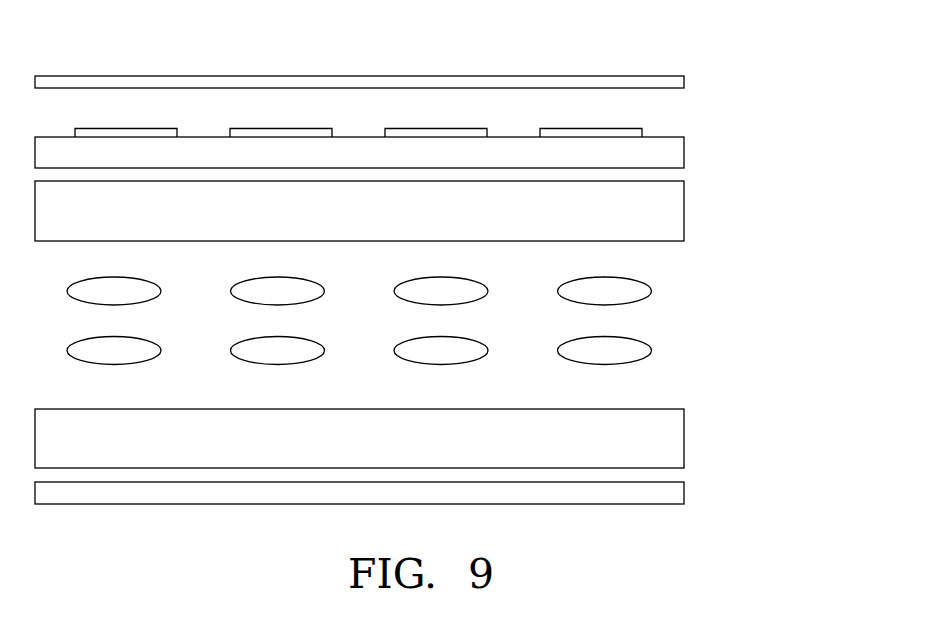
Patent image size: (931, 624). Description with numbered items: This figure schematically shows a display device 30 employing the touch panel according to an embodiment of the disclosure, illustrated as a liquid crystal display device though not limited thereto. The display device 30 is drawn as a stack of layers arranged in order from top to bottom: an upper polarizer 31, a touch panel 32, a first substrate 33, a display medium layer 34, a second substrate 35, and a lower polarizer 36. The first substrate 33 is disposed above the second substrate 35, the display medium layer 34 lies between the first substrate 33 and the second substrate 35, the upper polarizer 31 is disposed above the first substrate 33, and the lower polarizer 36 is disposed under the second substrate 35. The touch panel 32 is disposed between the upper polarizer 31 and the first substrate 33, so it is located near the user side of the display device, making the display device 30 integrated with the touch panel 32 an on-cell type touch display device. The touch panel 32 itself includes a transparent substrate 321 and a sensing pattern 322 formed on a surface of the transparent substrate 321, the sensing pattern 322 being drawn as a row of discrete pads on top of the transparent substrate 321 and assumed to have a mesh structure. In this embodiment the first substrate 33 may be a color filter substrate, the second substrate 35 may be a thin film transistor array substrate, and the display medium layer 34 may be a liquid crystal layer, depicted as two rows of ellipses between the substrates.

The display device 30 is at (376, 41).
The upper polarizer 31 is at (684, 82).
The touch panel 32 is at (440, 131).
The transparent substrate 321 is at (657, 157).
The sensing pattern 322 is at (633, 133).
The first substrate 33 is at (667, 214).
The display medium layer 34 is at (655, 257).
The second substrate 35 is at (667, 438).
The lower polarizer 36 is at (667, 494).